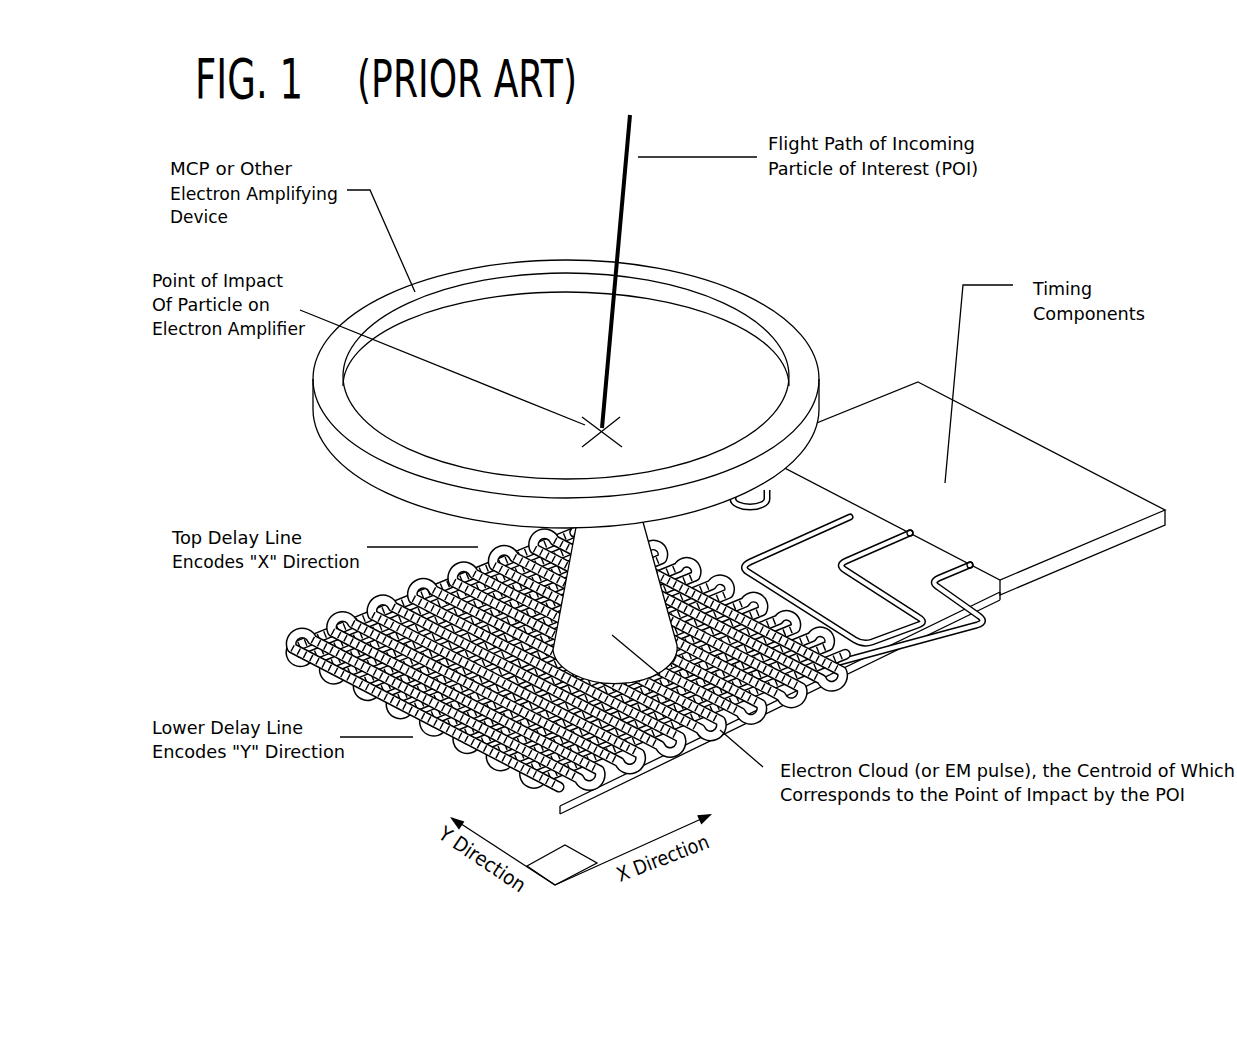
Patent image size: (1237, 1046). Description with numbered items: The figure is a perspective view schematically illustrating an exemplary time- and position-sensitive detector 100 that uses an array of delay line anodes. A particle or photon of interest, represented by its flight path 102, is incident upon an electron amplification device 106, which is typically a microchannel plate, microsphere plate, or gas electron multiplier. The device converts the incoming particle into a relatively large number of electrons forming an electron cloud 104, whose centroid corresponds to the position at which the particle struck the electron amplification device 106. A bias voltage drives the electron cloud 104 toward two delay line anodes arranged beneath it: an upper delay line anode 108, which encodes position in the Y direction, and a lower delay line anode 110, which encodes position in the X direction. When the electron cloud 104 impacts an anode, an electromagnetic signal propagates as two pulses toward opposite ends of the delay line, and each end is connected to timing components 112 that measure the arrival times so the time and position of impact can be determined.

The detector 100 is at (256, 663).
The flight path 102 is at (622, 225).
The electron cloud 104 is at (650, 643).
The electron amplification device 106 is at (772, 313).
The upper delay line anode 108 is at (293, 630).
The lower delay line anode 110 is at (287, 673).
The timing components 112 is at (1025, 453).